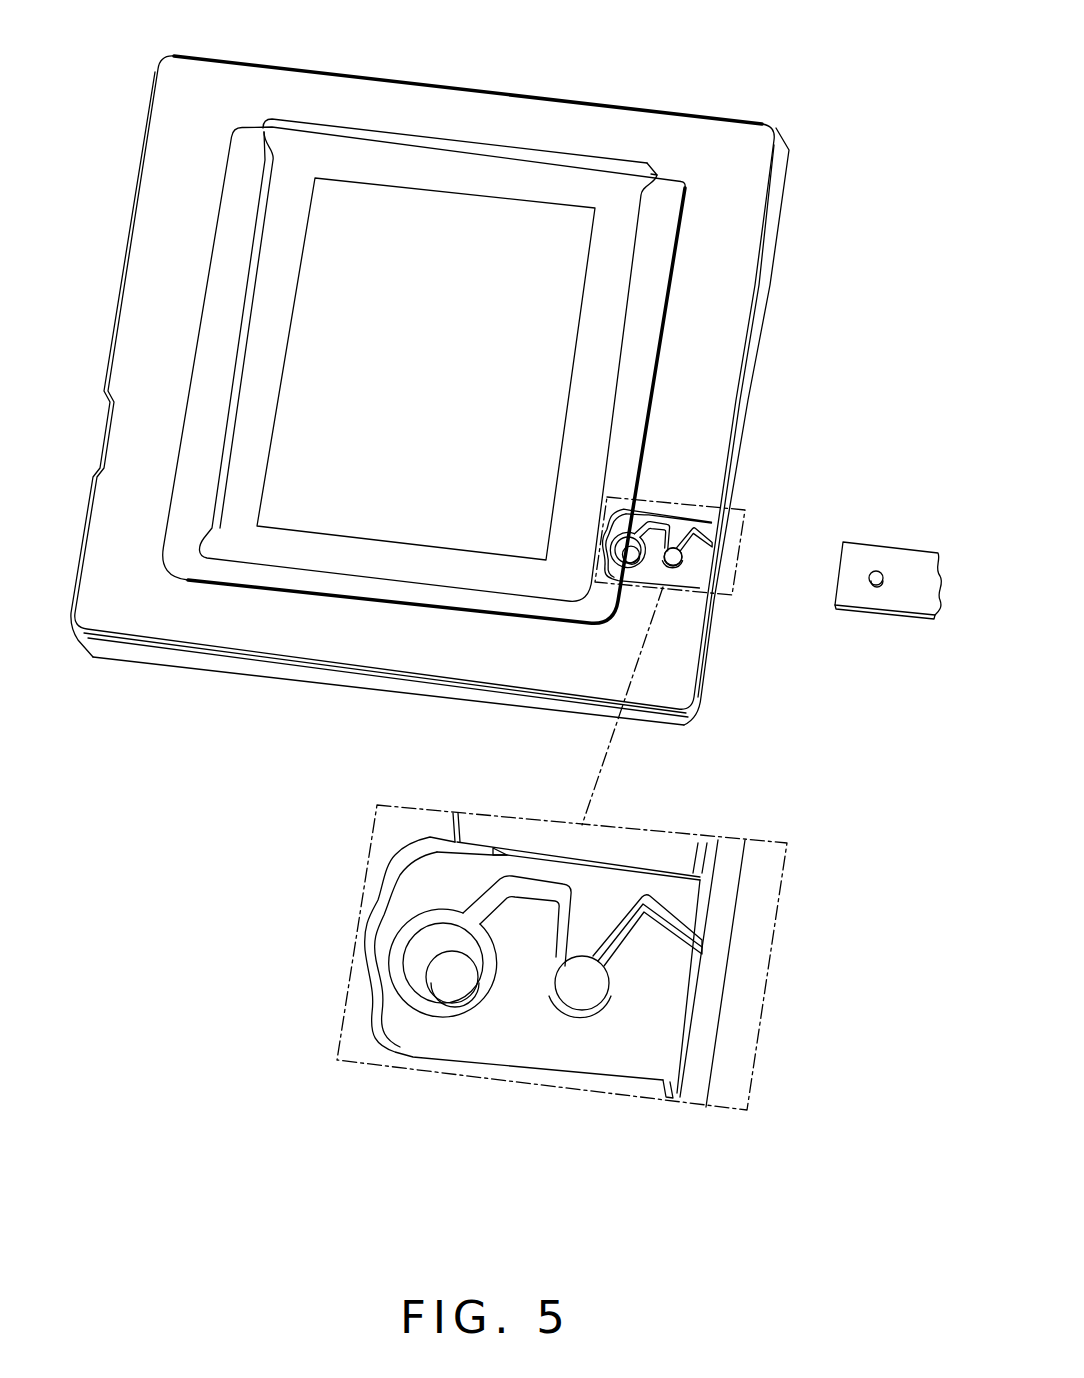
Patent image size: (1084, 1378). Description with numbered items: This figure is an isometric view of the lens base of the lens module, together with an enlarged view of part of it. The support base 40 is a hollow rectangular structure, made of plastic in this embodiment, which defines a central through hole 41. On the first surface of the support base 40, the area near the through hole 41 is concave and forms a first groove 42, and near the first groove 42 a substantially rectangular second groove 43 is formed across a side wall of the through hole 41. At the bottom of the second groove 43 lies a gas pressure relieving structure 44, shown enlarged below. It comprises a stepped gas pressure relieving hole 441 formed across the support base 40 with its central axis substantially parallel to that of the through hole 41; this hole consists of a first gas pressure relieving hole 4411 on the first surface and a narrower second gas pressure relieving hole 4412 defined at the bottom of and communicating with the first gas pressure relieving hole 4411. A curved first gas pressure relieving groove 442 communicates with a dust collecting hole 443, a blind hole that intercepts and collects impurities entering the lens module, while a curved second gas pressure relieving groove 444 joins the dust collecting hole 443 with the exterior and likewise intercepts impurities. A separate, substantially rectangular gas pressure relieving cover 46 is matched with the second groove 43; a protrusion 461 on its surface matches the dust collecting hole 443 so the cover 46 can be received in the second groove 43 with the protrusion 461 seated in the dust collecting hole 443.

The support base 40 is at (723, 147).
The through hole 41 is at (400, 227).
The first groove 42 is at (267, 392).
The second groove 43 is at (640, 517).
The gas pressure relieving structure 44 is at (680, 530).
The gas pressure relieving hole 441 is at (397, 1039).
The first gas pressure relieving hole 4411 is at (417, 970).
The second gas pressure relieving hole 4412 is at (458, 988).
The first gas pressure relieving groove 442 is at (565, 898).
The dust collecting hole 443 is at (580, 987).
The second gas pressure relieving groove 444 is at (660, 1032).
The gas pressure relieving cover 46 is at (889, 589).
The protrusion 461 is at (873, 586).